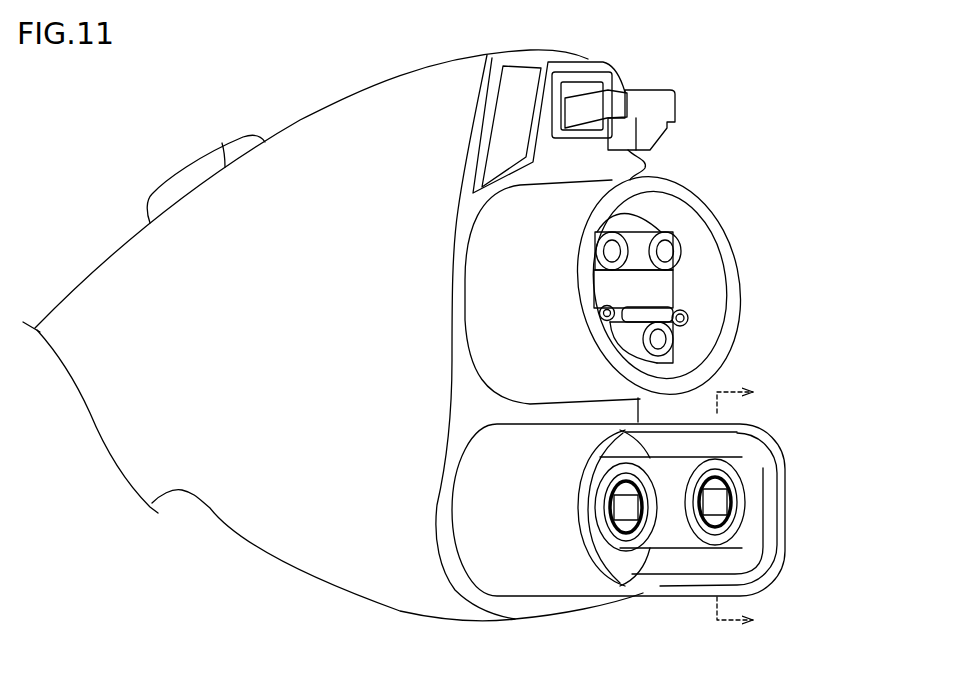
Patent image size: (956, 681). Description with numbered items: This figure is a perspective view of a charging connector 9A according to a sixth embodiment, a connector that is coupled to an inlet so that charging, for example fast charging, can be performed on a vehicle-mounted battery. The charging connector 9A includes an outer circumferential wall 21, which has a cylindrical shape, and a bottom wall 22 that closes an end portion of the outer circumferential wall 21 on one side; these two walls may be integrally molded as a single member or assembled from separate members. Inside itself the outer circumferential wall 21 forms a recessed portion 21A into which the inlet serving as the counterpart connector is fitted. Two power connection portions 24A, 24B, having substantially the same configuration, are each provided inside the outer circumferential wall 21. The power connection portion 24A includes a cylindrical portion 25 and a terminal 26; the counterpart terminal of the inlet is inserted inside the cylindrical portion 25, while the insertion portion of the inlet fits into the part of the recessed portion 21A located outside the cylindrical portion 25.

The charging connector 9A is at (278, 88).
The outer circumferential wall 21 is at (778, 476).
The recessed portion 21A is at (703, 448).
The bottom wall 22 is at (618, 450).
The power connection portion 24A is at (692, 548).
The power connection portion 24B is at (625, 552).
The cylindrical portion 25 is at (738, 500).
The terminal 26 is at (713, 500).